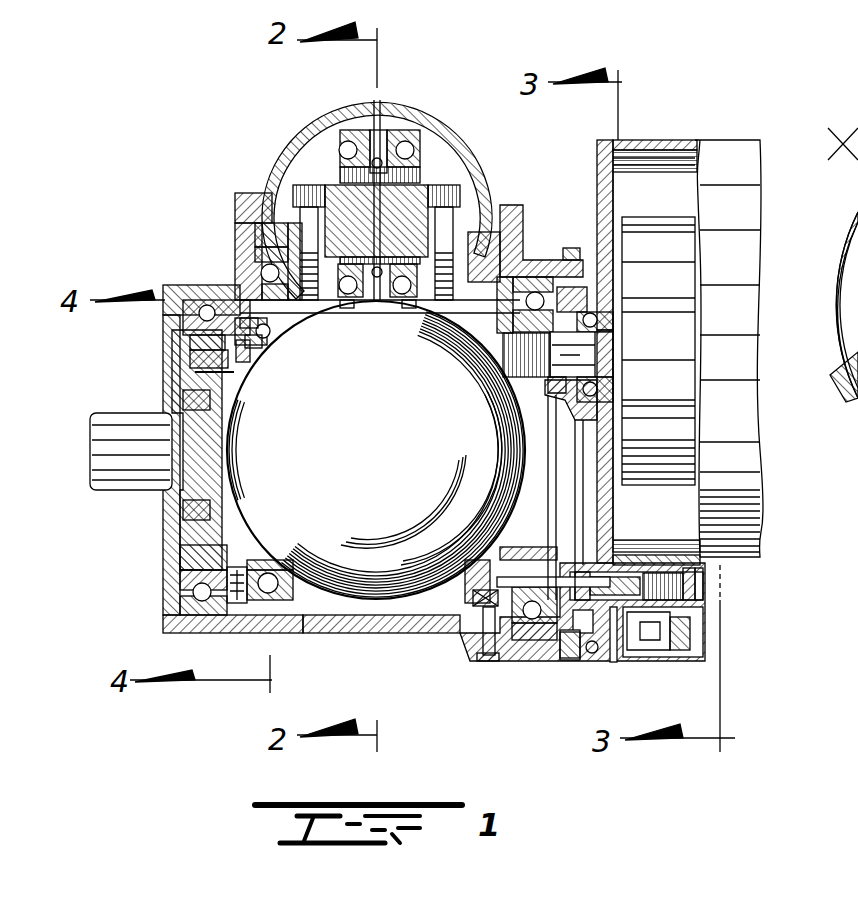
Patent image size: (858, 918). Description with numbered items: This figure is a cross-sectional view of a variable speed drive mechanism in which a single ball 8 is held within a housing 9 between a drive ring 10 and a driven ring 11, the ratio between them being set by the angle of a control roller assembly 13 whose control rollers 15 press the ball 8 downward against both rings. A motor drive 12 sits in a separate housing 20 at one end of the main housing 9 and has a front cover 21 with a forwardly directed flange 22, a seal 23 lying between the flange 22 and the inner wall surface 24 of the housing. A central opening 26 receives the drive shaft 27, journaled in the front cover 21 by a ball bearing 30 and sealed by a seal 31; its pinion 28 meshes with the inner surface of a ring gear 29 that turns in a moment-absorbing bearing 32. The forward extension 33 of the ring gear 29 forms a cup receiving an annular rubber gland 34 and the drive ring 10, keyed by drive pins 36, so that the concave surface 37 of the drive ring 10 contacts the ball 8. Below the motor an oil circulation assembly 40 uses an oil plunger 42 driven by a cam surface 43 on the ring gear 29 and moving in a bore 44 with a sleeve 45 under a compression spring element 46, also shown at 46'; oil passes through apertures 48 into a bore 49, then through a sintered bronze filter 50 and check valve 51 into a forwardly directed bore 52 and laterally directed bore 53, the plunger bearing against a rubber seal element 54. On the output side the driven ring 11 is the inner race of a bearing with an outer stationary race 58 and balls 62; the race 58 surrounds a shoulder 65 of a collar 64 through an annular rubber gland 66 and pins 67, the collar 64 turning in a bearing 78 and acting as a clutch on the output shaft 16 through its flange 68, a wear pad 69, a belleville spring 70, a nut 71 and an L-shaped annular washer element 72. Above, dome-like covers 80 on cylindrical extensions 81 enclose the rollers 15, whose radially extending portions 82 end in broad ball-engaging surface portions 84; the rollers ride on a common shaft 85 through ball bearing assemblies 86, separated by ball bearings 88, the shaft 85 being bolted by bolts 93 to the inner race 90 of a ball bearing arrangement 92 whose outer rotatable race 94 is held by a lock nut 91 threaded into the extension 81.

The ball 8 is at (372, 602).
The housing 9 is at (330, 634).
The drive ring 10 is at (432, 599).
The driven ring 11 is at (294, 592).
The motor drive 12 is at (748, 540).
The control roller assembly 13 is at (376, 128).
The control rollers 15 is at (342, 138).
The output shaft 16 is at (104, 490).
The motor housing 20 is at (666, 148).
The front cover 21 is at (598, 186).
The flange 22 is at (585, 292).
The seal 23 is at (570, 258).
The inner wall surface 24 is at (533, 258).
The central opening 26 is at (623, 317).
The drive shaft 27 is at (600, 342).
The pinion 28 is at (520, 378).
The ring gear 29 is at (520, 565).
The ball bearing 30 is at (623, 392).
The seal 31 is at (560, 380).
The bearing 32 is at (524, 585).
The forward extension 33 is at (480, 600).
The annular rubber gland 34 is at (486, 606).
The drive pins 36 is at (482, 338).
The concave surface 37 is at (470, 560).
The oil circulation assembly 40 is at (596, 660).
The oil plunger 42 is at (618, 585).
The cam surface 43 is at (547, 442).
The bore 44 is at (555, 560).
The sleeve 45 is at (598, 560).
The compression spring element 46 is at (727, 581).
The spring stop 46' is at (736, 589).
The apertures 48 is at (598, 575).
The bore 49 is at (700, 612).
The sintered bronze filter 50 is at (703, 648).
The check valve 51 is at (566, 655).
The forwardly directed bore 52 is at (522, 660).
The laterally directed bore 53 is at (481, 640).
The rubber seal element 54 is at (670, 575).
The outer stationary race 58 is at (270, 602).
The balls 62 is at (275, 578).
The collar 64 is at (245, 348).
The shoulder 65 is at (262, 352).
The annular rubber gland 66 is at (262, 336).
The pins 67 is at (272, 322).
The flange 68 is at (196, 343).
The wear pad 69 is at (208, 362).
The belleville spring 70 is at (195, 531).
The nut 71 is at (184, 398).
The annular washer element 72 is at (228, 373).
The bearing 78 is at (178, 610).
The dome-like covers 80 is at (852, 224).
The cylindrical extensions 81 is at (852, 404).
The radially extending portions 82 is at (366, 300).
The ball-engaging surface portions 84 is at (402, 300).
The shaft 85 is at (352, 200).
The ball bearing assemblies 86 is at (343, 146).
The ball bearings 88 is at (381, 135).
The inner race 90 is at (258, 300).
The lock nut 91 is at (477, 250).
The ball bearing arrangement 92 is at (264, 268).
The bolts 93 is at (292, 222).
The outer rotatable race 94 is at (262, 240).